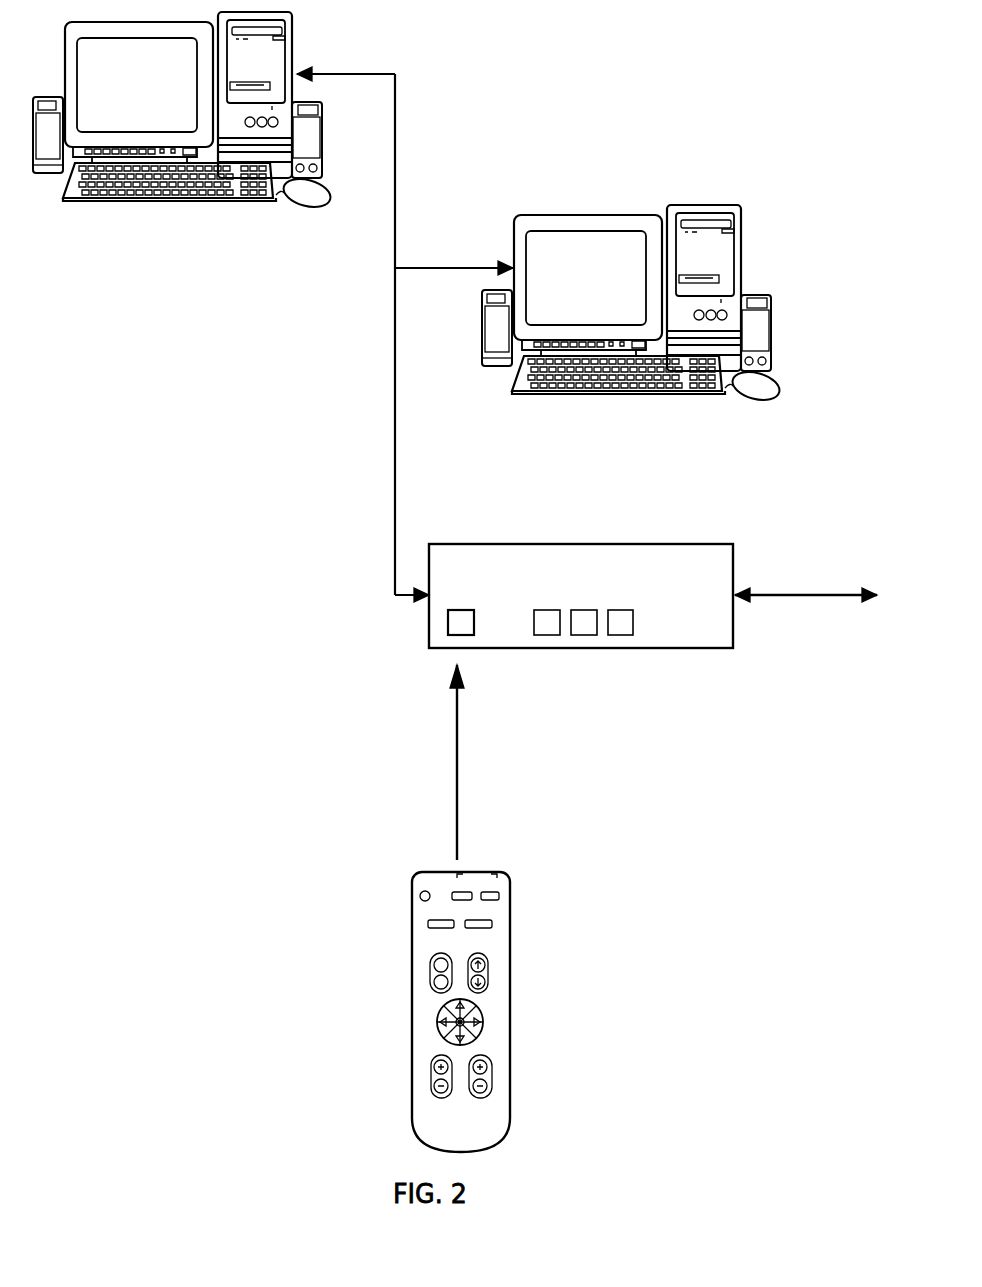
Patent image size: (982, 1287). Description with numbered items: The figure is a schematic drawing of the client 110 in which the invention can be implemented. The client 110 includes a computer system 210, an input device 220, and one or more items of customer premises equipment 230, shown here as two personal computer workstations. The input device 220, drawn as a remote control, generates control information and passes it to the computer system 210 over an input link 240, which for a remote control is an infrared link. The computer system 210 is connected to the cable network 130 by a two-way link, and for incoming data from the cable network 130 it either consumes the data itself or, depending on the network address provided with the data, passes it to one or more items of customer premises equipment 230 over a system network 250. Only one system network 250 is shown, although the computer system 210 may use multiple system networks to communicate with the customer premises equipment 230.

The client 110 is at (651, 147).
The cable network 130 is at (808, 593).
The computer system 210 is at (722, 631).
The input device 220 is at (447, 1134).
The customer premises equipment 230 is at (152, 95).
The input link 240 is at (455, 803).
The system network 250 is at (393, 455).